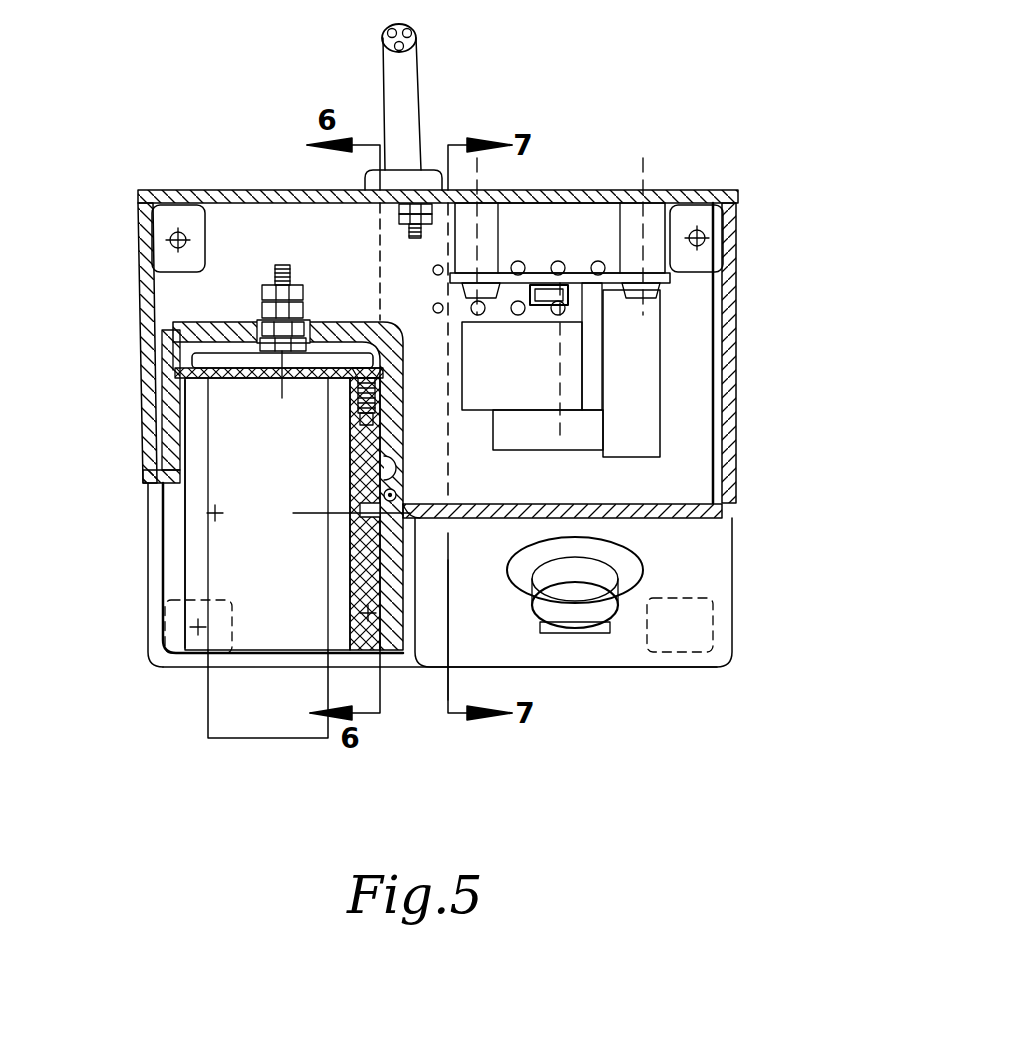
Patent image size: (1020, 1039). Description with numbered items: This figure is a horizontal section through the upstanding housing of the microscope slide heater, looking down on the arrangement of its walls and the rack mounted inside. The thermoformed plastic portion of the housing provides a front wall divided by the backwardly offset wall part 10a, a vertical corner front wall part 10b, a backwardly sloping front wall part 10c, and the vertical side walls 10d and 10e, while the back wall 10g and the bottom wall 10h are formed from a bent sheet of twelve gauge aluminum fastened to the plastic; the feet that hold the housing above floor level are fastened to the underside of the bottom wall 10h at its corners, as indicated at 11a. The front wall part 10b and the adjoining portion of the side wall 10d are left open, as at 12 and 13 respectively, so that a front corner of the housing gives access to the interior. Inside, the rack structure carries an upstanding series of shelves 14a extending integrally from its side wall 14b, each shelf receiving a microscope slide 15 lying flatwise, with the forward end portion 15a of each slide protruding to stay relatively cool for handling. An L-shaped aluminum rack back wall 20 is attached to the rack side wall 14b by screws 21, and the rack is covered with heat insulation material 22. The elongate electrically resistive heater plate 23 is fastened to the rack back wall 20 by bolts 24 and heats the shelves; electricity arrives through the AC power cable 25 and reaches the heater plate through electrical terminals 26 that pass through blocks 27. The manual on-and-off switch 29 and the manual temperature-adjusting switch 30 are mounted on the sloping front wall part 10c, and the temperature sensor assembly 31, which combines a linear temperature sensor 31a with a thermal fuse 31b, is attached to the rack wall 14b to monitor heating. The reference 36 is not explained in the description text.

The wall part 10a is at (440, 632).
The corner front wall part 10b is at (170, 670).
The front wall part 10c is at (710, 580).
The side wall 10d is at (141, 447).
The side wall 10e is at (736, 336).
The back wall 10g is at (590, 186).
The bottom wall 10h is at (322, 264).
The foot fastening 11a is at (167, 230).
The opening 12 is at (287, 680).
The opening 13 is at (136, 546).
The shelves 14a is at (193, 565).
The rack side wall 14b is at (448, 628).
The microscope slide 15 is at (287, 562).
The forward end portion 15a is at (247, 710).
The rack back wall 20 is at (165, 410).
The screws 21 is at (373, 403).
The heat insulation material 22 is at (400, 360).
The heater plate 23 is at (192, 360).
The bolts 24 is at (282, 398).
The AC power cable 25 is at (407, 97).
The electrical terminals 26 is at (281, 265).
The blocks 27 is at (268, 321).
The on-and-off switch 29 is at (592, 605).
The temperature-adjusting switch 30 is at (695, 633).
The temperature sensor assembly 31 is at (398, 466).
The linear temperature sensor 31a is at (448, 545).
The thermal fuse 31b is at (398, 495).
The terminal block 36 is at (597, 261).